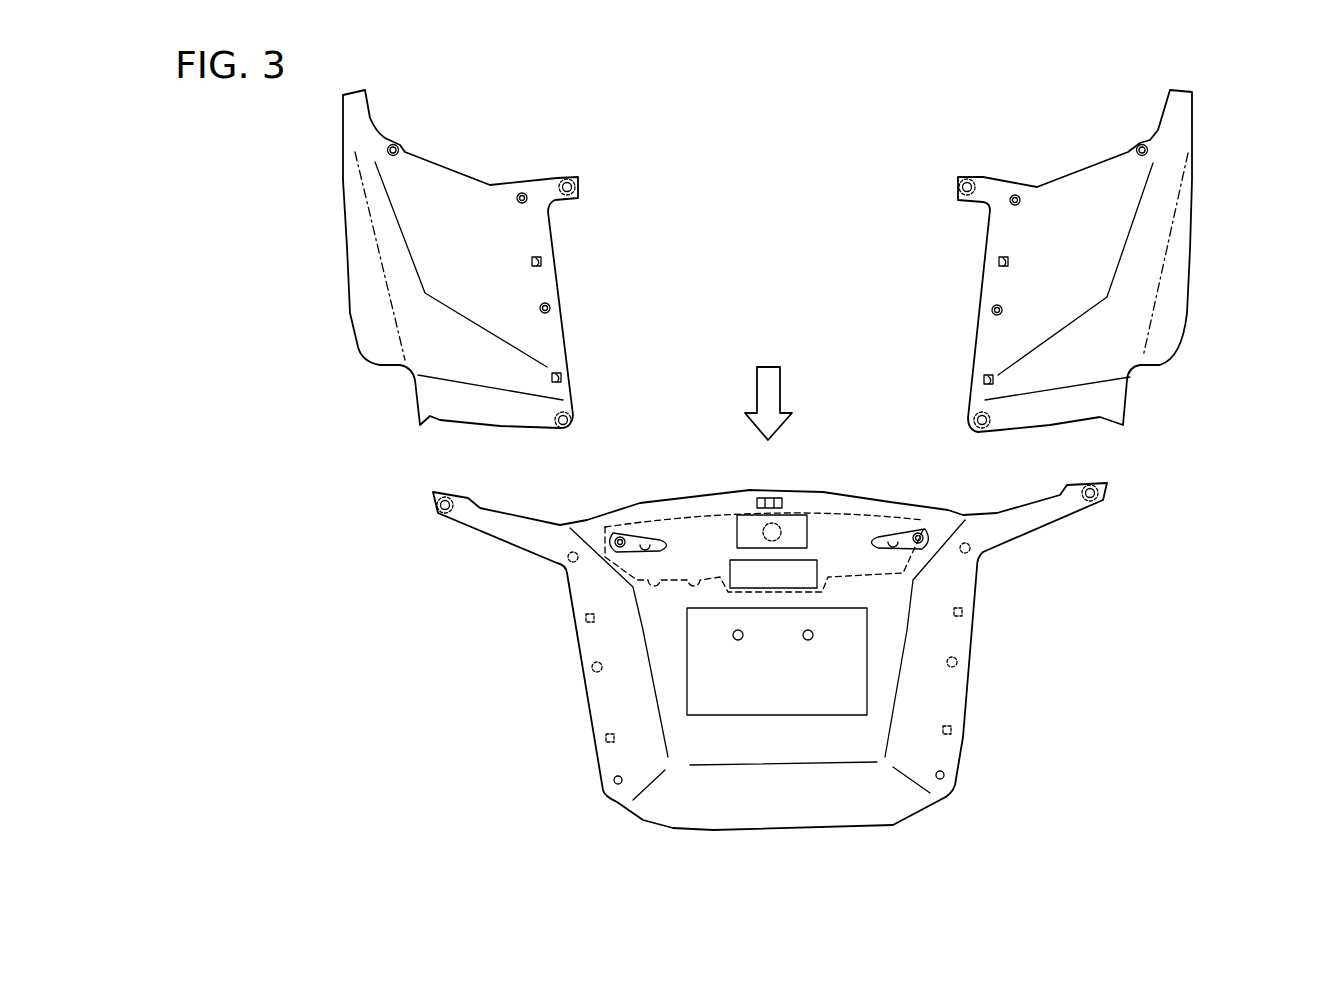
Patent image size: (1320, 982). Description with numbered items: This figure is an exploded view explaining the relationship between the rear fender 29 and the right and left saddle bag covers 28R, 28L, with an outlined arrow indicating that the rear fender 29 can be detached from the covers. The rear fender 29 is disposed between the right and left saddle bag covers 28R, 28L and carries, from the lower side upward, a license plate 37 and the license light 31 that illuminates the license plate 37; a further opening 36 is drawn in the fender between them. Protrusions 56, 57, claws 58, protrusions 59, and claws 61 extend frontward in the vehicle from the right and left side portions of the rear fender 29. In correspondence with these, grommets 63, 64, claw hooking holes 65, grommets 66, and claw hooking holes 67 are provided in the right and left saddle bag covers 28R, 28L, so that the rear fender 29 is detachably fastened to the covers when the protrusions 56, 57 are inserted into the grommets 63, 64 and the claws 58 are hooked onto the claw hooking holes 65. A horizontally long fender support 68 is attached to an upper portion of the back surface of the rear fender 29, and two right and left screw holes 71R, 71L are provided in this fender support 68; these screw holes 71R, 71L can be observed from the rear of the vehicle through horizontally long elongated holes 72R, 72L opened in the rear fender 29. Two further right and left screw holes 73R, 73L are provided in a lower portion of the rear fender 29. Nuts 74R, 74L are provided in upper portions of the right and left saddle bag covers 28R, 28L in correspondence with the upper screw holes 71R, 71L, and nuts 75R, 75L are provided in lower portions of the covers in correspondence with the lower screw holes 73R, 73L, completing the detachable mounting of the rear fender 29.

The left saddle bag cover 28L is at (368, 279).
The right saddle bag cover 28R is at (1178, 281).
The rear fender 29 is at (807, 800).
The license light 31 is at (745, 530).
The license lamp opening 36 is at (742, 577).
The license plate 37 is at (733, 692).
The protrusion 56 is at (433, 513).
The protrusion 57 is at (568, 560).
The claw 58 is at (585, 622).
The protrusion 59 is at (592, 670).
The claw 61 is at (603, 743).
The grommet 63 is at (403, 143).
The grommet 64 is at (530, 200).
The claw hooking hole 65 is at (540, 267).
The grommet 66 is at (552, 310).
The claw hooking hole 67 is at (563, 387).
The fender support 68 is at (833, 512).
The left screw hole 71L is at (617, 534).
The right screw hole 71R is at (921, 533).
The left elongated hole 72L is at (642, 538).
The right elongated hole 72R is at (902, 536).
The left lower screw hole 73L is at (620, 803).
The right lower screw hole 73R is at (943, 790).
The left upper nut 74L is at (582, 187).
The right upper nut 74R is at (958, 197).
The left lower nut 75L is at (580, 420).
The right lower nut 75R is at (970, 422).